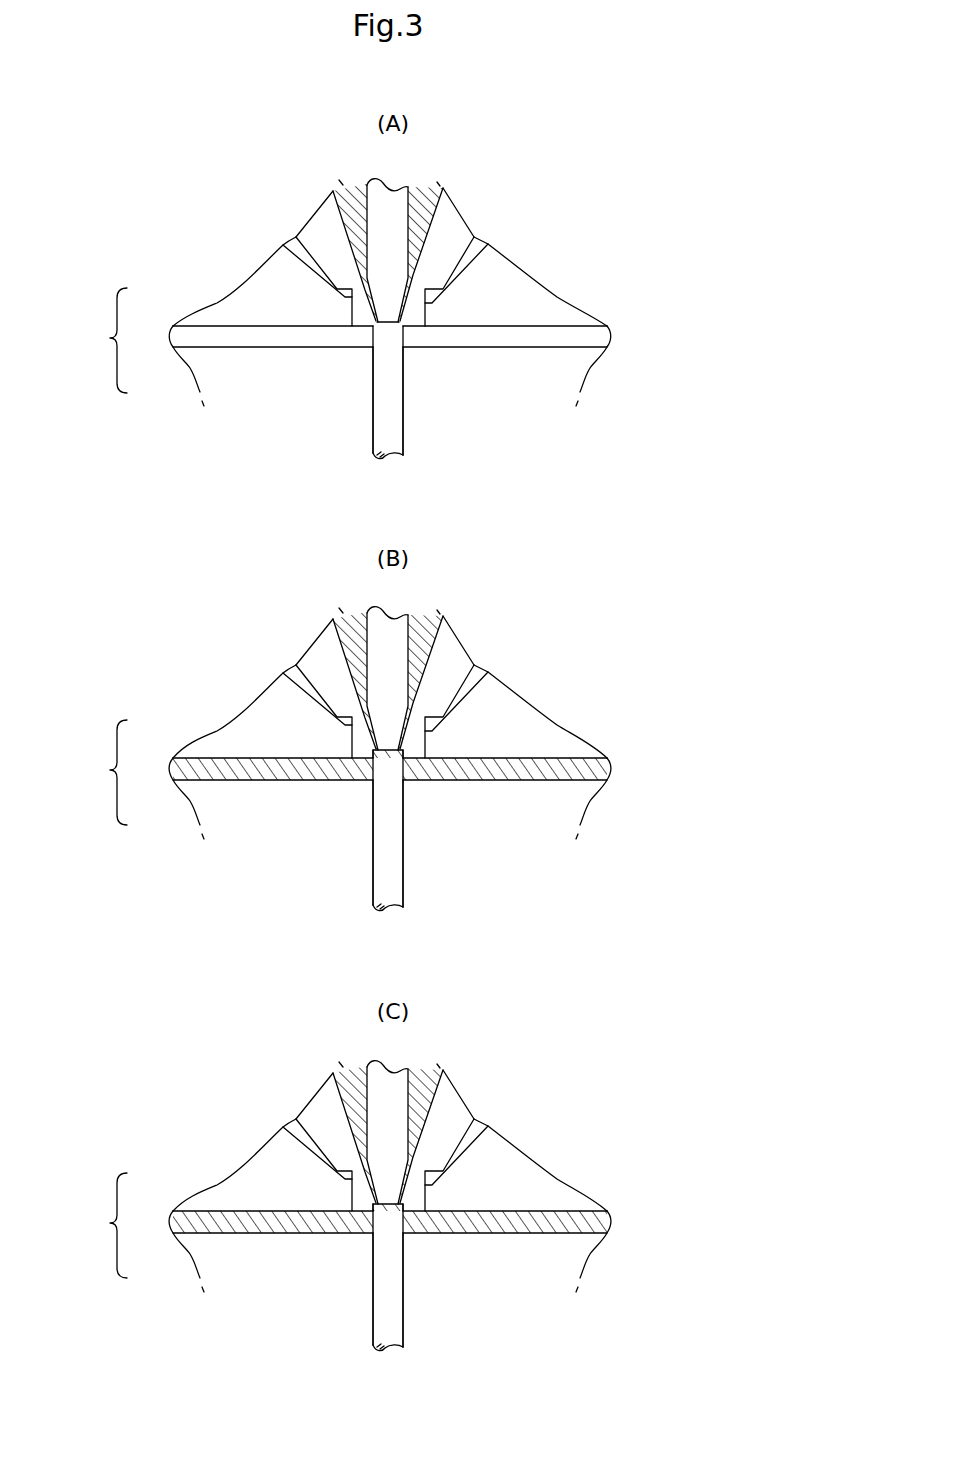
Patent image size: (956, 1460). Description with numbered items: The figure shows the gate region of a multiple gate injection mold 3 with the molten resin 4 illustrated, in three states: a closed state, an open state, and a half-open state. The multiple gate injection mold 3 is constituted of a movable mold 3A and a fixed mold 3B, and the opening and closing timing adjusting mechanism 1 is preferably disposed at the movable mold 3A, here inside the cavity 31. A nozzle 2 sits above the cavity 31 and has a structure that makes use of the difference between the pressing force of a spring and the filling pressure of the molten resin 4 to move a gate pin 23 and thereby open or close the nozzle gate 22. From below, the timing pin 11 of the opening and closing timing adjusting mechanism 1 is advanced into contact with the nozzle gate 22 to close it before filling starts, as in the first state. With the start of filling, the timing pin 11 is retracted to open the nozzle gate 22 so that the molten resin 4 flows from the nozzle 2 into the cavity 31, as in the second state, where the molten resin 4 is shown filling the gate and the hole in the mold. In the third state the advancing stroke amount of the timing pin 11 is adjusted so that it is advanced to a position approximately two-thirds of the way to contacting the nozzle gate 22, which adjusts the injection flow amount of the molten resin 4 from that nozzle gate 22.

The opening and closing timing adjusting mechanism 1 is at (370, 410).
The timing pin 11 is at (388, 390).
The nozzle 2 is at (475, 202).
The nozzle gate 22 is at (370, 327).
The gate pin 23 is at (383, 279).
The multiple gate injection mold 3 is at (106, 783).
The movable mold 3A is at (222, 385).
The fixed mold 3B is at (222, 303).
The cavity 31 is at (522, 338).
The molten resin 4 is at (433, 225).